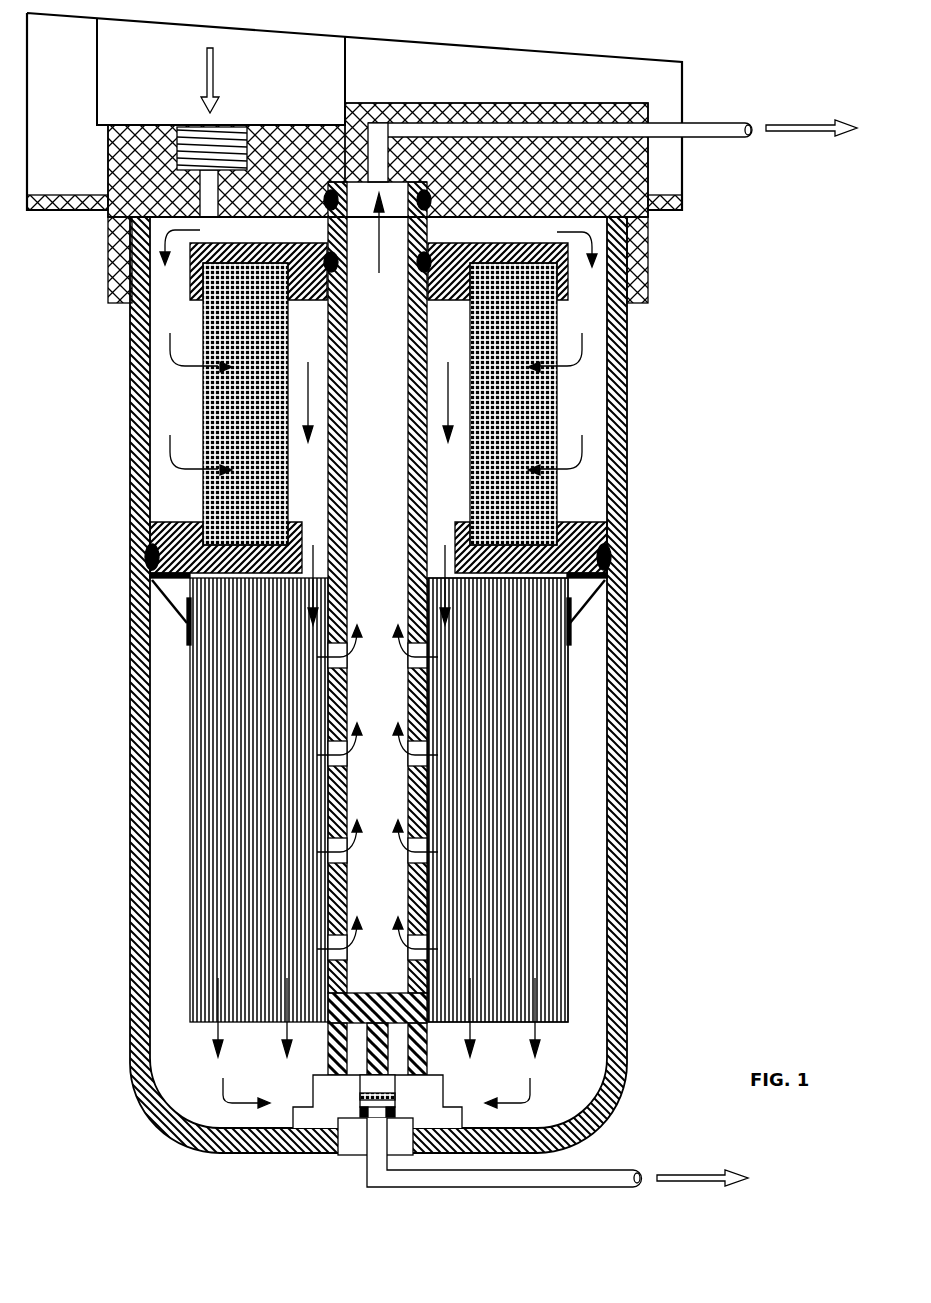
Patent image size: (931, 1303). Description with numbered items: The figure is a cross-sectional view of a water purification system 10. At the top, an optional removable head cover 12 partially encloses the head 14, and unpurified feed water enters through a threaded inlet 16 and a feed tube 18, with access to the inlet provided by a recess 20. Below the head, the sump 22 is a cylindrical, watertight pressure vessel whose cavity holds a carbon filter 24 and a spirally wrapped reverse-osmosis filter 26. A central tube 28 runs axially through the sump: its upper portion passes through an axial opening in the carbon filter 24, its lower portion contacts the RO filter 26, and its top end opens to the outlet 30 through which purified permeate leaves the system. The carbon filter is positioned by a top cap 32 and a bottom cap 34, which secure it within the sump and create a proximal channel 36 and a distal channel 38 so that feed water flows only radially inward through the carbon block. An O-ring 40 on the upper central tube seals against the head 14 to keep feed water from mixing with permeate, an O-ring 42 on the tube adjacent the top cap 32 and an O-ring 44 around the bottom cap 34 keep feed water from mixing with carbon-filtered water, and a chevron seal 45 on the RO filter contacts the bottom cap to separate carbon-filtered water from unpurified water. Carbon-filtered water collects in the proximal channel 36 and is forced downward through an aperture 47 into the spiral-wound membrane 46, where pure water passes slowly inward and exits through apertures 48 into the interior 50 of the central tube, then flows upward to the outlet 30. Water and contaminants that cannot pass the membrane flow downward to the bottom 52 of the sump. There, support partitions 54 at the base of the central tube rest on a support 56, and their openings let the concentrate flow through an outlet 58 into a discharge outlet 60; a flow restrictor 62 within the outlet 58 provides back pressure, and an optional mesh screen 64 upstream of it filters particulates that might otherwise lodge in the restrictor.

The water purification system 10 is at (746, 74).
The head cover 12 is at (682, 160).
The head 14 is at (650, 277).
The threaded inlet 16 is at (180, 127).
The feed tube 18 is at (200, 185).
The recess 20 is at (347, 82).
The sump 22 is at (628, 380).
The carbon filter 24 is at (558, 423).
The reverse-osmosis filter 26 is at (568, 772).
The central tube 28 is at (300, 483).
The outlet 30 is at (715, 138).
The top cap 32 is at (190, 283).
The bottom cap 34 is at (627, 528).
The proximal channel 36 is at (295, 392).
The distal channel 38 is at (160, 422).
The O-ring 40 is at (437, 200).
The O-ring 42 is at (435, 263).
The O-ring 44 is at (627, 562).
The chevron seal 45 is at (598, 605).
The membrane 46 is at (548, 822).
The aperture 47 is at (493, 493).
The apertures 48 is at (420, 860).
The interior 50 is at (380, 965).
The bottom 52 is at (563, 1095).
The support partitions 54 is at (328, 1052).
The support 56 is at (293, 1117).
The outlet 58 is at (360, 1078).
The discharge outlet 60 is at (617, 1172).
The flow restrictor 62 is at (362, 1118).
The mesh screen 64 is at (360, 1100).